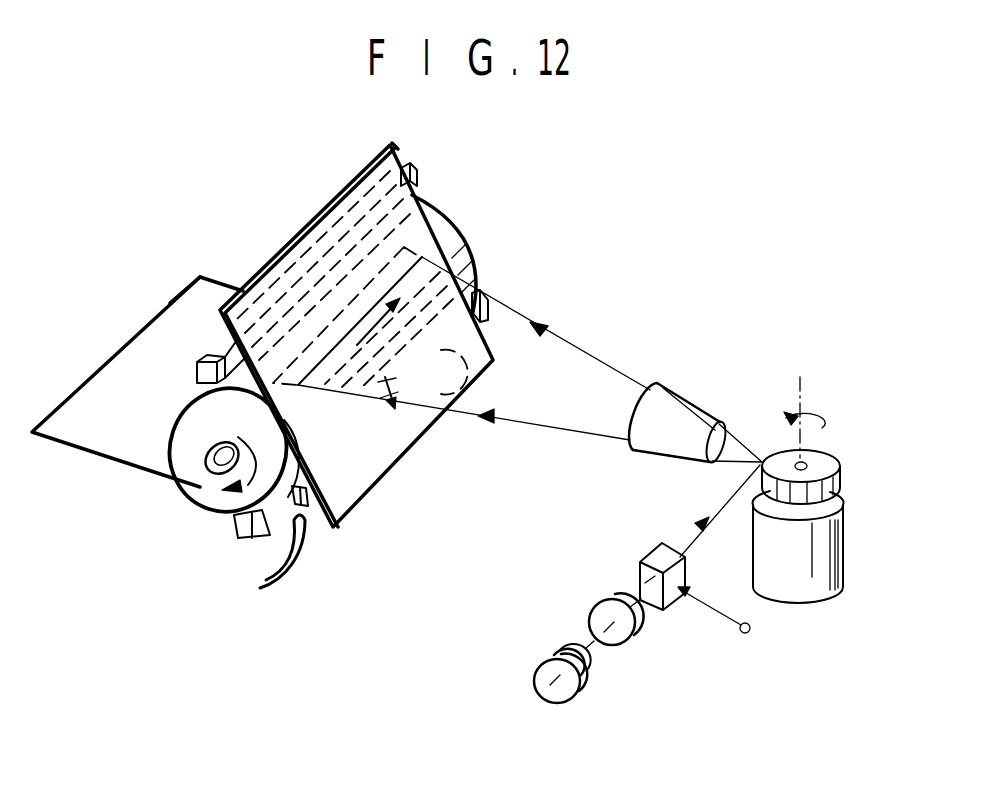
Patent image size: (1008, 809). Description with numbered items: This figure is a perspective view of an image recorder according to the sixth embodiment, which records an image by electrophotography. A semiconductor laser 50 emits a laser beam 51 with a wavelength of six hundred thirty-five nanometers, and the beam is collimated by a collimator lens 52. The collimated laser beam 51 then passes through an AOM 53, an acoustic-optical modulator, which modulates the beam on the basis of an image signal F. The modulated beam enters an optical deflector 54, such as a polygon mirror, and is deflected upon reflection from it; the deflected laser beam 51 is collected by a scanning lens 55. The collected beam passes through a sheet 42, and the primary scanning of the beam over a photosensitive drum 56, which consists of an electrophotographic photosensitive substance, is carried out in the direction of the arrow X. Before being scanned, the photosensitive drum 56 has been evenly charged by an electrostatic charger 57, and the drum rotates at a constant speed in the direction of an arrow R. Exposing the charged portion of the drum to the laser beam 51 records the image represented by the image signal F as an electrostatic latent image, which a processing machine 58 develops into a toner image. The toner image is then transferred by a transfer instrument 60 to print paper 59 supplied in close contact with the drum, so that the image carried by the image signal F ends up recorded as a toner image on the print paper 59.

The sheet 42 is at (378, 470).
The semiconductor laser 50 is at (542, 675).
The laser beam 51 is at (588, 645).
The collimator lens 52 is at (600, 603).
The AOM (acoustic-optical modulator) 53 is at (647, 562).
The optical deflector 54 is at (820, 465).
The scanning lens 55 is at (703, 403).
The photosensitive drum 56 is at (458, 265).
The electrostatic charger 57 is at (418, 173).
The processing machine 58 is at (310, 537).
The print paper 59 is at (93, 430).
The transfer instrument 60 is at (250, 530).
The arrow R is at (232, 515).
The image signal F is at (725, 619).